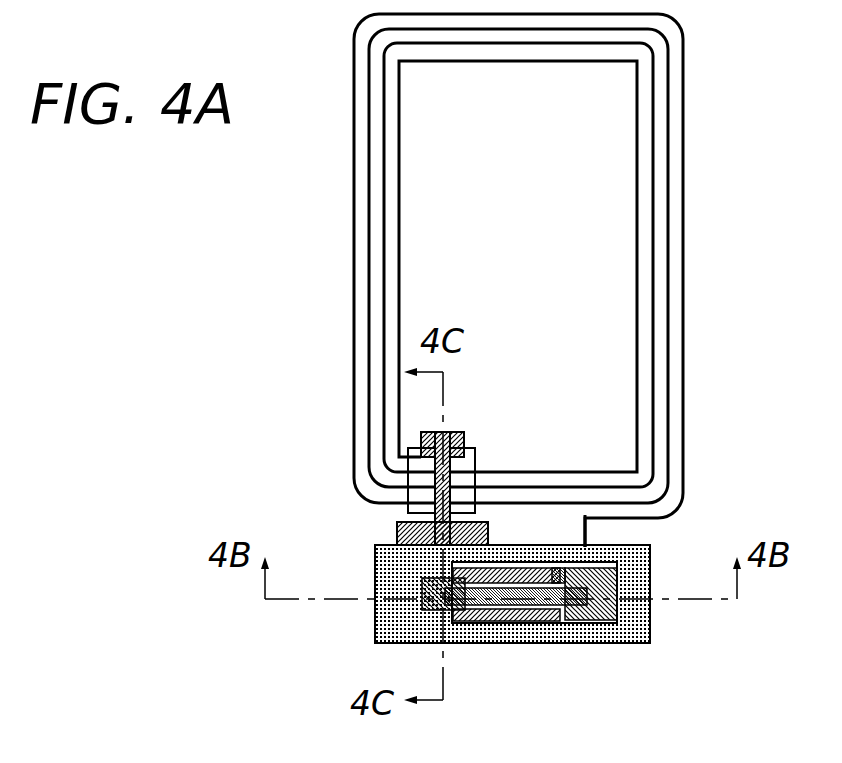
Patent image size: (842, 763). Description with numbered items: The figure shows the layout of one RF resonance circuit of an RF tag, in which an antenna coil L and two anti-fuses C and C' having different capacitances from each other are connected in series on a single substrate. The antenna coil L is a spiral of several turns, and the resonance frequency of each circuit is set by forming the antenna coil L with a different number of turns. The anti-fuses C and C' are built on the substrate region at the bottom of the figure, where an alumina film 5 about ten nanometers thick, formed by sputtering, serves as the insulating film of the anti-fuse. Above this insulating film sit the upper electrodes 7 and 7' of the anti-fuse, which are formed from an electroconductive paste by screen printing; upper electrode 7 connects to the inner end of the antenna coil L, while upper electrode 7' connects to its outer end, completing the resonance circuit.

The antenna coil L is at (338, 212).
The alumina film 5 is at (597, 630).
The upper electrode 7 is at (389, 506).
The upper electrode 7' is at (591, 514).
The anti-fuse C is at (376, 501).
The anti-fuse C' is at (679, 494).